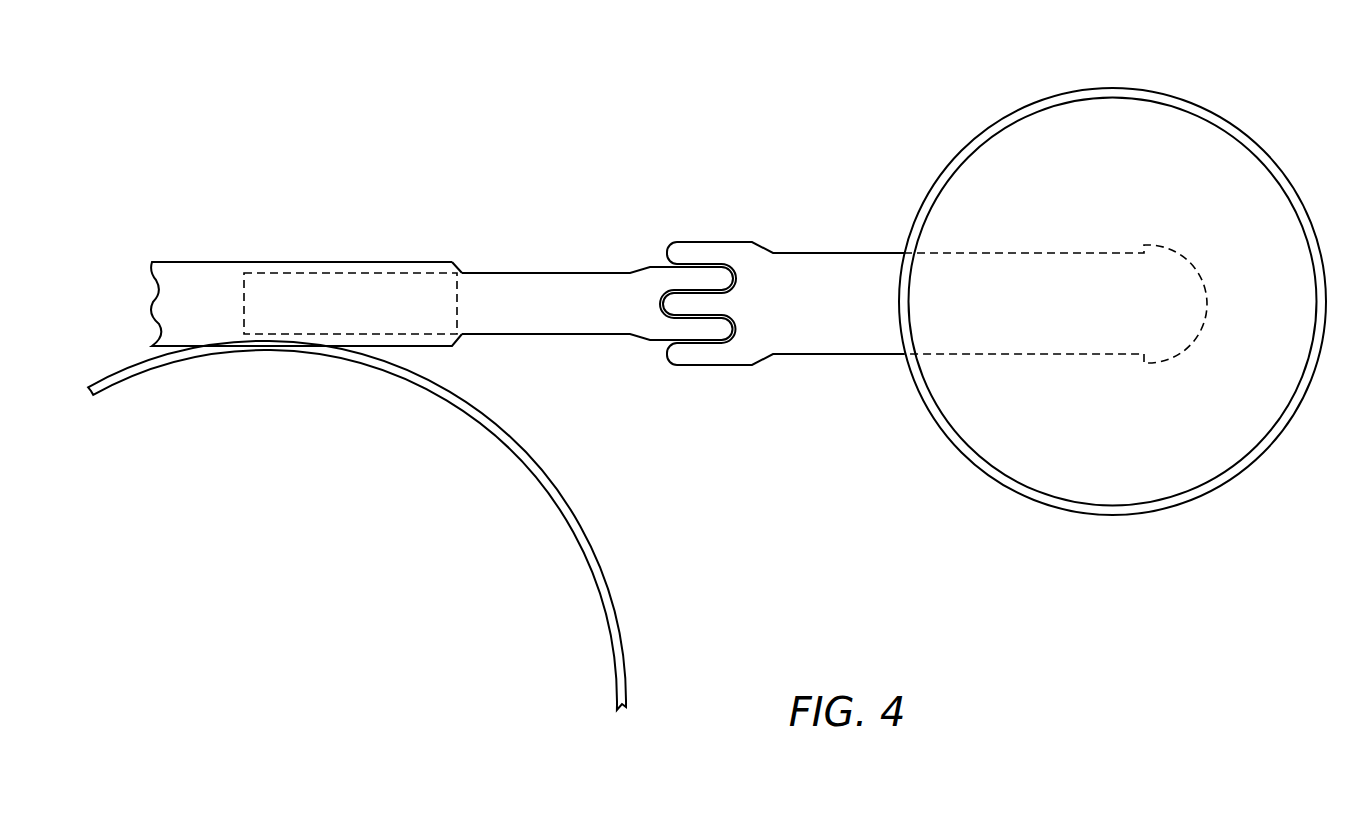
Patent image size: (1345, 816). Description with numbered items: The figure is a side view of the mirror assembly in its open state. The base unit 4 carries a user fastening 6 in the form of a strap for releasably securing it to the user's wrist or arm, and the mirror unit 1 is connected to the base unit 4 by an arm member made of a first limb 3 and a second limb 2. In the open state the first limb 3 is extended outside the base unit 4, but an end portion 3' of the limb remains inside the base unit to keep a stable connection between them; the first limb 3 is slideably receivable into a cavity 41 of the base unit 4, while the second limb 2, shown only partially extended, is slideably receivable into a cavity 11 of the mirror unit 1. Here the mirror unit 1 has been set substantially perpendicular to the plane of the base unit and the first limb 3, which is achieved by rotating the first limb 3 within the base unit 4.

The mirror unit 1 is at (1110, 88).
The cavity of the mirror unit 11 is at (1053, 355).
The second limb 2 is at (838, 355).
The first limb 3 is at (597, 330).
The end portion of the limb 3' is at (350, 342).
The base unit 4 is at (233, 261).
The cavity of the base unit 41 is at (399, 268).
The user fastening 6 is at (572, 543).